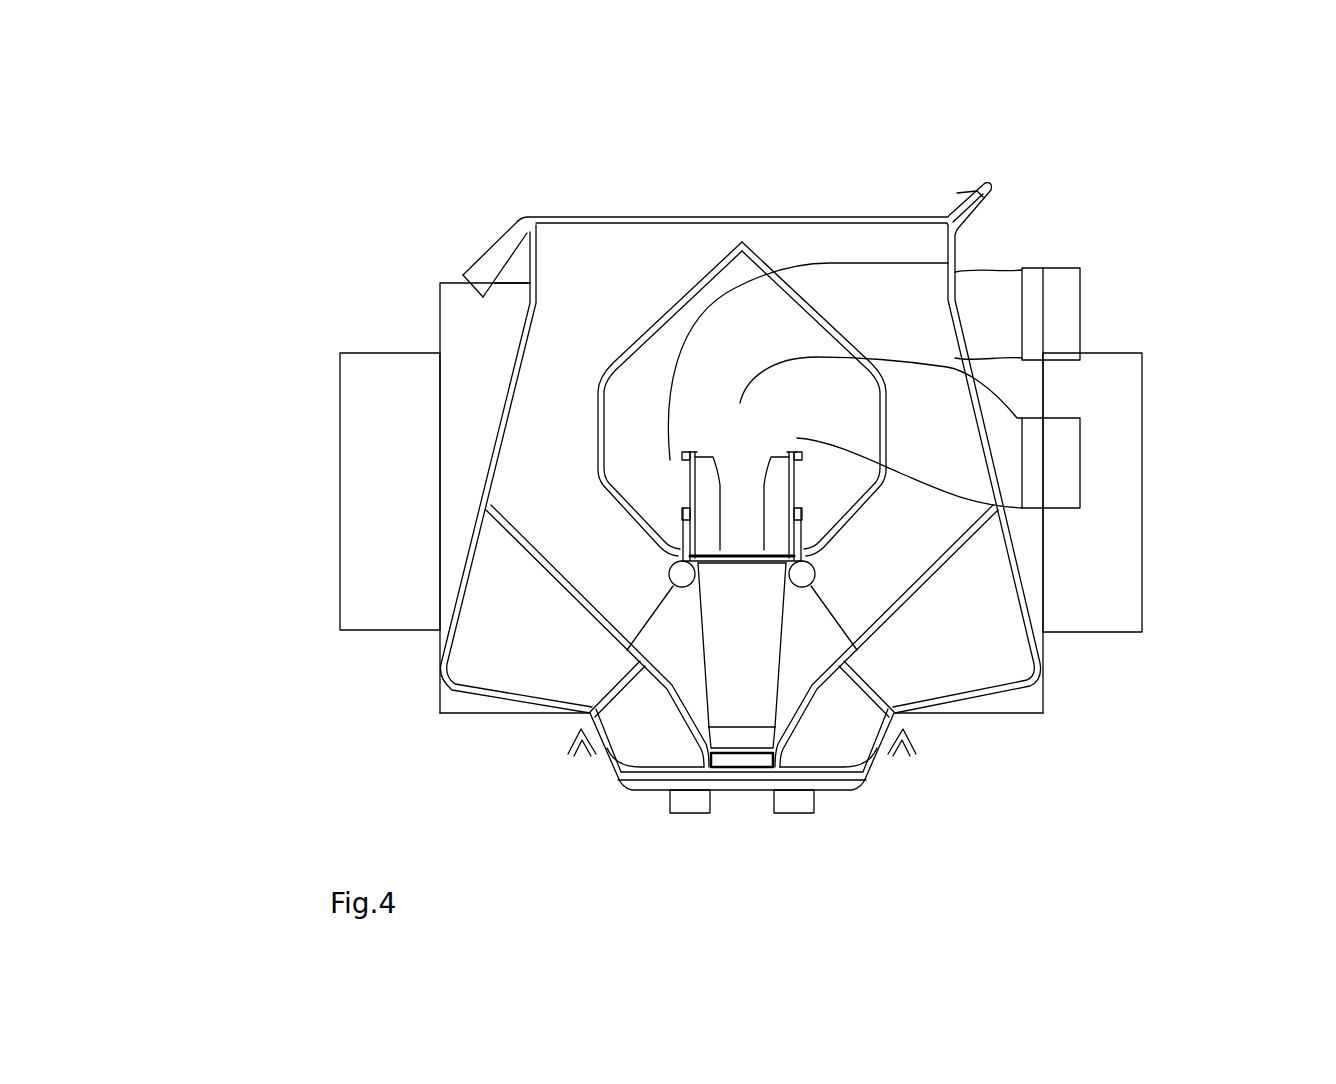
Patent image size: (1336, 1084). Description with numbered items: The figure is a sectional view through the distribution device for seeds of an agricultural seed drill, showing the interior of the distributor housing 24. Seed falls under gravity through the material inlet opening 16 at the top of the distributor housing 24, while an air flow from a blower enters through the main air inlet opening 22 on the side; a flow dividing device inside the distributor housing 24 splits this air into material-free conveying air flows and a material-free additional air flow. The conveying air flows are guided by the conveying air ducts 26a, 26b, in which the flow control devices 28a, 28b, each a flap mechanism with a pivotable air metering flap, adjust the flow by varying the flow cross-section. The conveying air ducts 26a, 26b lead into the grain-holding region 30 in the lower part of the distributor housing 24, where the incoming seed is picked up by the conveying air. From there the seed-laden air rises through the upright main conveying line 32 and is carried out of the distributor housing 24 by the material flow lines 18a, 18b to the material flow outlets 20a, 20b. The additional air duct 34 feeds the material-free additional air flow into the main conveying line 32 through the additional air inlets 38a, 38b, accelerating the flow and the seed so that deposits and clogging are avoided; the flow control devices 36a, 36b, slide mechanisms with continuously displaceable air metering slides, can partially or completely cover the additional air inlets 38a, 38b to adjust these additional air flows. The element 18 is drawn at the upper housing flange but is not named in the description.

The material inlet opening 16 is at (737, 208).
The mounting flange 18 is at (483, 215).
The material flow line 18a is at (1000, 430).
The material flow line 18b is at (985, 278).
The material flow outlet 20a is at (1093, 465).
The material flow outlet 20b is at (1093, 307).
The main air inlet opening 22 is at (314, 465).
The distributor housing 24 is at (407, 332).
The conveying air duct 26a is at (485, 660).
The conveying air duct 26b is at (1017, 667).
The flow control device 28a is at (603, 683).
The flow control device 28b is at (890, 690).
The grain-holding region 30 is at (745, 702).
The main conveying line 32 is at (727, 667).
The additional air duct 34 is at (640, 400).
The flow control device 36a is at (690, 533).
The flow control device 36b is at (797, 527).
The additional air inlet 38a is at (665, 508).
The additional air inlet 38b is at (815, 512).